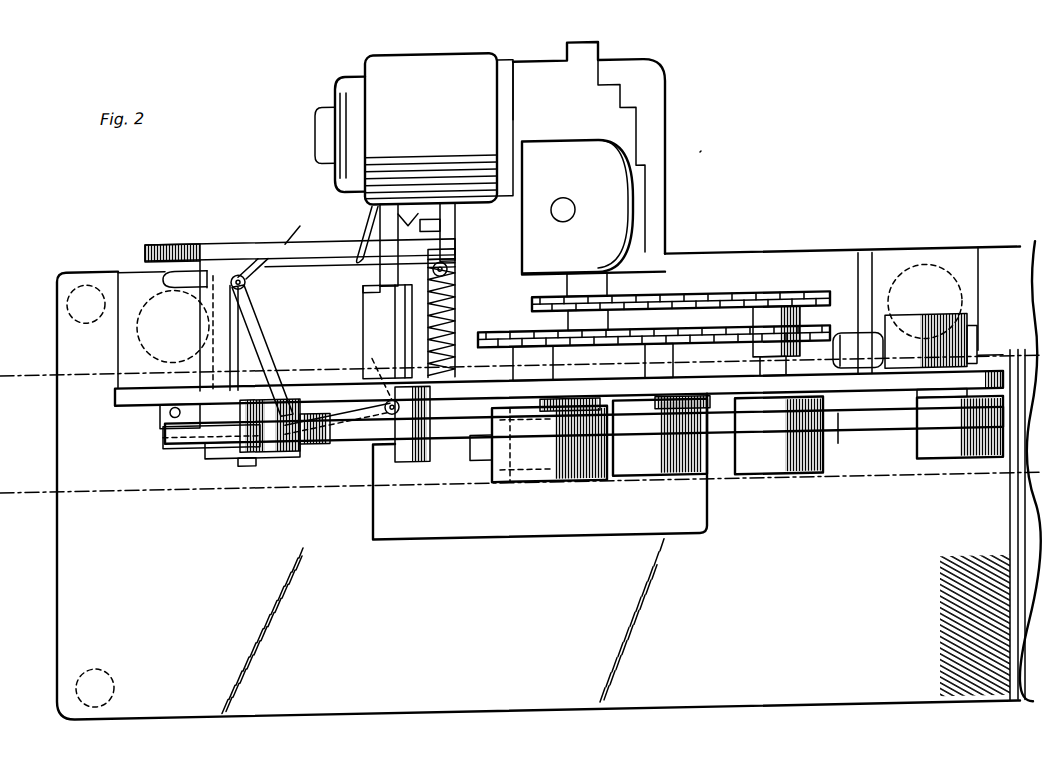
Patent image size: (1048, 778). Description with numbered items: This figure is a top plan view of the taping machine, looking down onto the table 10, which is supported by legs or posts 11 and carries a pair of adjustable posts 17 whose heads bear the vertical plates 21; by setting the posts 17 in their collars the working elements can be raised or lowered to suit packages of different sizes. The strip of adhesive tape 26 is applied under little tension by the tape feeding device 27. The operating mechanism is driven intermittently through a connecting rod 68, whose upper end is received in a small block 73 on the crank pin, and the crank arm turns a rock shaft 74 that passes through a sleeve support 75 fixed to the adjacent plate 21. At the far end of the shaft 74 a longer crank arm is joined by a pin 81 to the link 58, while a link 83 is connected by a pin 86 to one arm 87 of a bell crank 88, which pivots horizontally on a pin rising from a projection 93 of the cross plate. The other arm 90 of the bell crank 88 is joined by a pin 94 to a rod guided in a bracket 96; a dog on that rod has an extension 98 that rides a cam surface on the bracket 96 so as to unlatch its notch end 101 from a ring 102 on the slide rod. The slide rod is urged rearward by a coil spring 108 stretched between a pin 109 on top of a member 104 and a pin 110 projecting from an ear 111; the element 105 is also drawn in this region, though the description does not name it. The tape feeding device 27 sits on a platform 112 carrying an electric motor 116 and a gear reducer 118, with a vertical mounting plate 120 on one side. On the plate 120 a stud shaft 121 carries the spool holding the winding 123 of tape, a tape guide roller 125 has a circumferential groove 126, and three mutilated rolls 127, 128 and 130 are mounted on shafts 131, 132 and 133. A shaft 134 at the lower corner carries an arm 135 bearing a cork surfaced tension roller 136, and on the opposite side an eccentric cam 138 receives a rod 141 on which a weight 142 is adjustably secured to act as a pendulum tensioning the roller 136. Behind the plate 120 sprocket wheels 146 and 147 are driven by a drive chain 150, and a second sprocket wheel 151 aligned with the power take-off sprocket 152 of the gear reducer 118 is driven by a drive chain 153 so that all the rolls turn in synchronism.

The table 10 is at (528, 722).
The legs or posts 11 is at (67, 306).
The posts 17 is at (140, 352).
The vertical plate or flange 21 is at (236, 348).
The strip of adhesive tape 26 is at (850, 447).
The tape feeding device 27 is at (709, 170).
The link 58 is at (288, 252).
The connecting rod 68 is at (162, 420).
The small block 73 is at (173, 391).
The rock shaft 74 is at (205, 333).
The sleeve support 75 is at (198, 313).
The pin 81 is at (165, 249).
The link 83 is at (247, 261).
The pin 86 is at (262, 273).
The arm of bell crank 87 is at (249, 310).
The bell crank 88 is at (285, 406).
The arm of bell crank 90 is at (340, 432).
The projection 93 is at (305, 452).
The pin 94 is at (372, 366).
The bracket 96 is at (365, 337).
The extension of dog 98 is at (366, 222).
The notch end of dog 101 is at (404, 198).
The ring 102 is at (440, 201).
The member 104 is at (400, 422).
The post 105 is at (760, 374).
The coil spring 108 is at (365, 293).
The pin 109 is at (450, 384).
The pin 110 is at (447, 275).
The ear 111 is at (442, 261).
The platform 112 is at (667, 118).
The electric motor 116 is at (343, 83).
The gear reducer 118 is at (630, 220).
The mounting plate 120 is at (883, 410).
The stud shaft 121 is at (248, 480).
The winding of pressure sensitive adhesive tape 123 is at (165, 452).
The tape guide roller 125 is at (425, 450).
The circumferential groove 126 is at (420, 468).
The roll 127 is at (498, 490).
The intermediate roll 128 is at (645, 488).
The roll 130 is at (760, 490).
The shaft 131 is at (545, 410).
The shaft 132 is at (650, 410).
The shaft 133 is at (780, 406).
The shaft 134 is at (978, 366).
The arm 135 is at (960, 430).
The tension roller 136 is at (945, 478).
The eccentric cam 138 is at (972, 334).
The rod 141 is at (920, 334).
The weight 142 is at (848, 350).
The sprocket wheel 146 is at (490, 342).
The sprocket wheel 147 is at (660, 370).
The drive chain 150 is at (750, 322).
The second sprocket wheel 151 is at (800, 308).
The power take-off sprocket 152 is at (540, 308).
The drive chain 153 is at (692, 310).